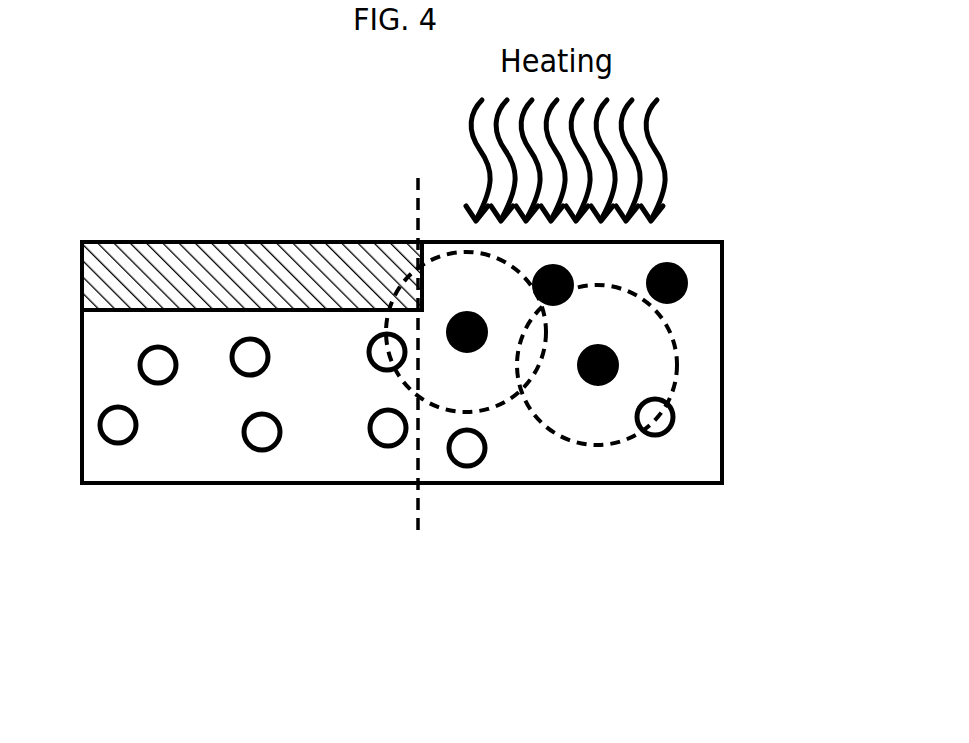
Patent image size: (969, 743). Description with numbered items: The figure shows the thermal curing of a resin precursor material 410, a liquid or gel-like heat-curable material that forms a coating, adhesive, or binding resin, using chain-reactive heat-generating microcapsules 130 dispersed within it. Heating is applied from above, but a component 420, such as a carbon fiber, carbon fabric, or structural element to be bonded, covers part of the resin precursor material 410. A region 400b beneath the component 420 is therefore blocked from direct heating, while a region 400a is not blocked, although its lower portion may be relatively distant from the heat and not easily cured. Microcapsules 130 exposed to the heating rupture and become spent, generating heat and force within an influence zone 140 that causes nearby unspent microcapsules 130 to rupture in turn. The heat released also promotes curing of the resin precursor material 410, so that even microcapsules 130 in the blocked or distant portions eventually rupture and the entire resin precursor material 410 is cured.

The chain-reactive heat-generating microcapsules 130 is at (687, 273).
The influence zone 140 is at (678, 363).
The region not blocked from direct heating 400a is at (570, 383).
The region blocked from direct heating 400b is at (378, 358).
The resin precursor material 410 is at (567, 452).
The component 420 is at (200, 265).